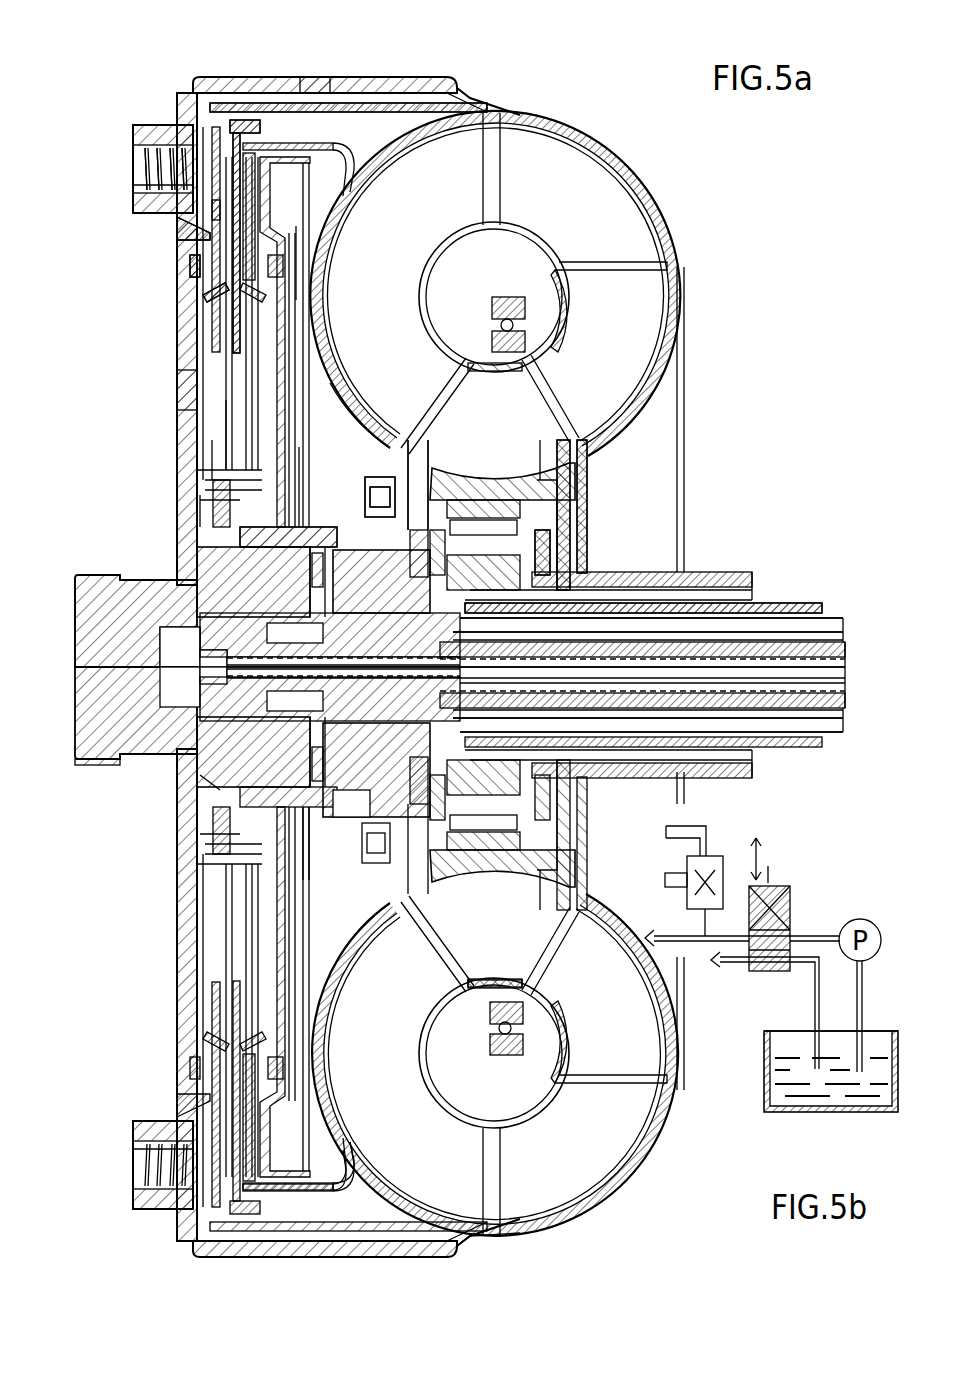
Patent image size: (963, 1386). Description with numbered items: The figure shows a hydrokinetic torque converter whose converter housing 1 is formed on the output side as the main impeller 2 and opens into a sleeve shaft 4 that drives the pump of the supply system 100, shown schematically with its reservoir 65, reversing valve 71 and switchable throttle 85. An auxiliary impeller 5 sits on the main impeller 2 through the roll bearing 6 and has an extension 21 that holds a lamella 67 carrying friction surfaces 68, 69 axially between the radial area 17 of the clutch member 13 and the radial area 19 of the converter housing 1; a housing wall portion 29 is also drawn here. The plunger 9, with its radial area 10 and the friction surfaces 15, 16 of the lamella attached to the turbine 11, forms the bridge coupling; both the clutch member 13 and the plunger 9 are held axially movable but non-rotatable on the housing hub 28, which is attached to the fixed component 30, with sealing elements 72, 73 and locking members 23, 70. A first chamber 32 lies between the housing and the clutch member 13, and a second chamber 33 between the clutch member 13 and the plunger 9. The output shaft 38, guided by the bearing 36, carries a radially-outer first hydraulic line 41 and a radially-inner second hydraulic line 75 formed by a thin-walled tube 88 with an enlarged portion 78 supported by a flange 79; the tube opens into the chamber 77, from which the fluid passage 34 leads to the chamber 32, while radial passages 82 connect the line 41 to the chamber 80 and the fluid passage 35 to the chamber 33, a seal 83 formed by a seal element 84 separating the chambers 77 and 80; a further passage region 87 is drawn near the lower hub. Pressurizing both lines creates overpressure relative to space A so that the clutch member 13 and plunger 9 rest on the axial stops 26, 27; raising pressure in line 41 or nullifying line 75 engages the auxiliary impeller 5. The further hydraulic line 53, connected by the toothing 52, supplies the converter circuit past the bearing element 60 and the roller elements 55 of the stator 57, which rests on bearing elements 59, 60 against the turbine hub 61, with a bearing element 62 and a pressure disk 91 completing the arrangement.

In FIG. 5A, the converter housing 1 is at (190, 405).
In FIG. 5A, the main impeller 2 is at (630, 378).
In FIG. 5A, the sleeve shaft 4 is at (616, 572).
In FIG. 5A, the auxiliary impeller 5 is at (640, 238).
In FIG. 5A, the roll bearing 6 is at (525, 323).
In FIG. 5A, the plunger 9 is at (280, 293).
In FIG. 5A, the radial area 10 is at (268, 200).
In FIG. 5A, the turbine 11 is at (340, 335).
In FIG. 5A, the clutch member 13 is at (240, 342).
In FIG. 5A, the friction surface 15 is at (228, 222).
In FIG. 5A, the friction surface 16 is at (322, 150).
In FIG. 5A, the radial area 17 is at (228, 200).
In FIG. 5A, the radial area 19 is at (200, 145).
In FIG. 5A, the extension 21 is at (350, 105).
In FIG. 5A, the locking member 23 is at (225, 325).
In FIG. 5A, the axial stop 26 is at (330, 383).
In FIG. 5A, the axial stop 27 is at (300, 495).
In FIG. 5A, the housing hub 28 is at (240, 522).
In FIG. 5A, the housing wall 29 is at (315, 140).
In FIG. 5A, the fixed component 30 is at (86, 563).
In FIG. 5A, the first chamber 32 is at (210, 382).
In FIG. 5A, the second chamber 33 is at (300, 447).
In FIG. 5A, the fluid passage 34 is at (200, 500).
In FIG. 5A, the fluid passage 35 is at (320, 545).
In FIG. 5B, the bearing 36 is at (312, 858).
In FIG. 5A, the output shaft 38 is at (770, 635).
In FIG. 5B, the first hydraulic line 41 is at (606, 690).
In FIG. 5A, the toothing 52 is at (565, 548).
In FIG. 5A, the hydraulic line 53 is at (695, 590).
In FIG. 5A, the roller elements 55 is at (470, 500).
In FIG. 5A, the stator 57 is at (570, 442).
In FIG. 5A, the bearing element 59 is at (397, 491).
In FIG. 5A, the bearing element 60 is at (580, 510).
In FIG. 5A, the turbine hub 61 is at (380, 477).
In FIG. 5B, the bearing element 62 is at (362, 845).
In FIG. 5B, the reservoir 65 is at (823, 1090).
In FIG. 5A, the lamella 67 is at (222, 100).
In FIG. 5A, the friction surface 68 is at (205, 170).
In FIG. 5A, the friction surface 69 is at (222, 208).
In FIG. 5A, the locking member 70 is at (207, 292).
In FIG. 5B, the reversing valve 71 is at (792, 919).
In FIG. 5A, the sealing element 72 is at (222, 430).
In FIG. 5A, the sealing element 73 is at (212, 462).
In FIG. 5B, the second hydraulic line 75 is at (648, 690).
In FIG. 5A, the chamber 77 is at (195, 687).
In FIG. 5B, the enlarged portion 78 is at (140, 756).
In FIG. 5A, the flange 79 is at (120, 612).
In FIG. 5A, the second chamber 80 is at (160, 642).
In FIG. 5B, the radial passages 82 is at (200, 775).
In FIG. 5A, the seal 83 is at (178, 598).
In FIG. 5A, the seal element 84 is at (155, 577).
In FIG. 5B, the switchable throttle 85 is at (713, 850).
In FIG. 5B, the passage 87 is at (362, 792).
In FIG. 5A, the tube 88 is at (640, 640).
In FIG. 5A, the pressure disk 91 is at (425, 450).
In FIG. 5B, the supply system 100 is at (880, 1020).
In FIG. 5A, the space A is at (296, 226).